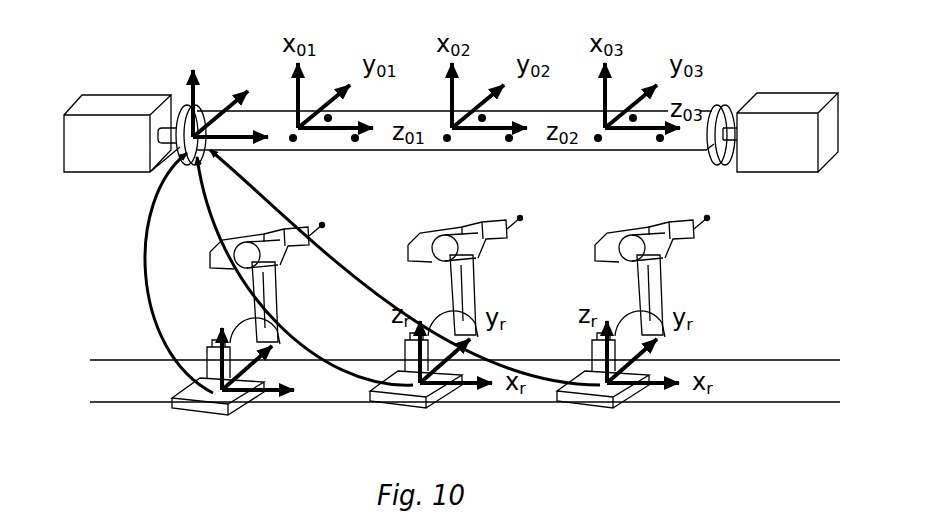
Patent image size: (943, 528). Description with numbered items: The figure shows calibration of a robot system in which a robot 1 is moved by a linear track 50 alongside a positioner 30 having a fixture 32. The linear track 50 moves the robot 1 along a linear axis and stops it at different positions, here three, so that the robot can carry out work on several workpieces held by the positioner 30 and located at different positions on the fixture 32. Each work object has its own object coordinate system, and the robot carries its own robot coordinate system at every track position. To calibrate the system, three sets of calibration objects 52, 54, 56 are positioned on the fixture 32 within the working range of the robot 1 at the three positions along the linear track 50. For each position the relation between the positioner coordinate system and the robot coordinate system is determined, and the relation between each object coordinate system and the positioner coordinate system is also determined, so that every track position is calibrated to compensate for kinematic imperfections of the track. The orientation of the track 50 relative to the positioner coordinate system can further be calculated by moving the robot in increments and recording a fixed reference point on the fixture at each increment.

The positioner 30 is at (113, 66).
The fixture 32 is at (683, 149).
The set of calibration objects 52 is at (293, 142).
The set of calibration objects 54 is at (447, 142).
The set of calibration objects 56 is at (598, 142).
The robot 1 is at (270, 295).
The linear track 50 is at (140, 392).